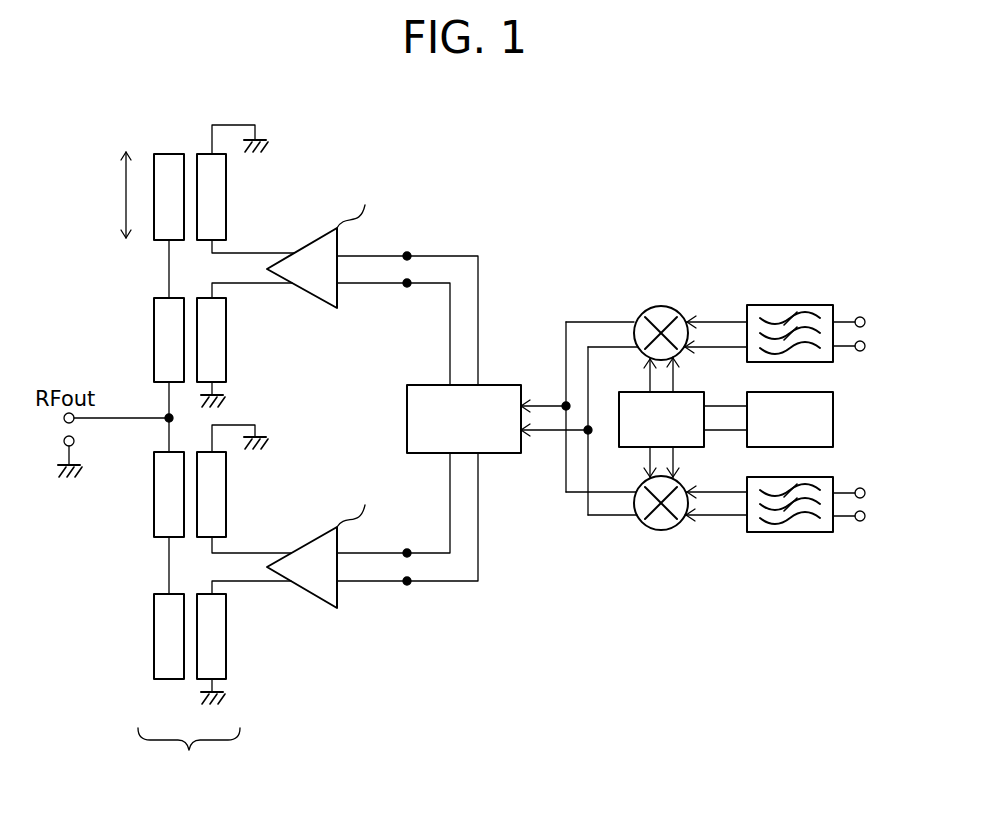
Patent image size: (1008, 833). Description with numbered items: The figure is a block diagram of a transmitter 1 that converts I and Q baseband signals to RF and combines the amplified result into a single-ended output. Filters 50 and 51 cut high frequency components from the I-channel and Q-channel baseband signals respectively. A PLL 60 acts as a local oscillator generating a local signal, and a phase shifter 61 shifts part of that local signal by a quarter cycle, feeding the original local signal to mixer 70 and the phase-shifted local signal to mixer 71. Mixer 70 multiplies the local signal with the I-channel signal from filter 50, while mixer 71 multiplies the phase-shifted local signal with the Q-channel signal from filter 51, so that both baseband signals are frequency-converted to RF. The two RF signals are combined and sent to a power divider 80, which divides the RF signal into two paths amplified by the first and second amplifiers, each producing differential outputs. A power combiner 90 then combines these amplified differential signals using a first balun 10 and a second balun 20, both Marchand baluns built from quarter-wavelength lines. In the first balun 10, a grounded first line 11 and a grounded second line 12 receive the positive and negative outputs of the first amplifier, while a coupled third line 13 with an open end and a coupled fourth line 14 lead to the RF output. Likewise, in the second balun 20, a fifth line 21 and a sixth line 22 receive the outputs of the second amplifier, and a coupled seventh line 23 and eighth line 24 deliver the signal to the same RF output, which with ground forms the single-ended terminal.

The transmitter 1 is at (498, 685).
The first balun 10 is at (118, 132).
The first line 11 is at (226, 191).
The second line 12 is at (226, 348).
The third line 13 is at (154, 240).
The fourth line 14 is at (154, 343).
The second balun 20 is at (110, 700).
The fifth line 21 is at (226, 652).
The sixth line 22 is at (226, 488).
The seventh line 23 is at (154, 638).
The eighth line 24 is at (154, 497).
The filter 50 is at (790, 305).
The filter 51 is at (790, 532).
The PLL 60 is at (833, 415).
The phase shifter 61 is at (704, 392).
The mixer 70 is at (661, 306).
The mixer 71 is at (655, 530).
The power divider 80 is at (497, 385).
The power combiner 90 is at (189, 755).